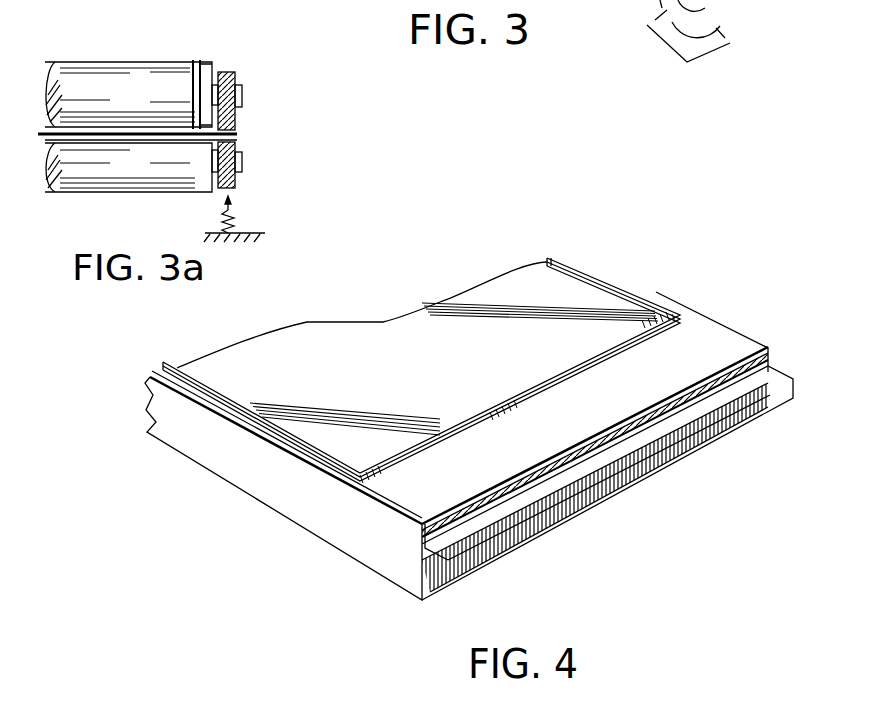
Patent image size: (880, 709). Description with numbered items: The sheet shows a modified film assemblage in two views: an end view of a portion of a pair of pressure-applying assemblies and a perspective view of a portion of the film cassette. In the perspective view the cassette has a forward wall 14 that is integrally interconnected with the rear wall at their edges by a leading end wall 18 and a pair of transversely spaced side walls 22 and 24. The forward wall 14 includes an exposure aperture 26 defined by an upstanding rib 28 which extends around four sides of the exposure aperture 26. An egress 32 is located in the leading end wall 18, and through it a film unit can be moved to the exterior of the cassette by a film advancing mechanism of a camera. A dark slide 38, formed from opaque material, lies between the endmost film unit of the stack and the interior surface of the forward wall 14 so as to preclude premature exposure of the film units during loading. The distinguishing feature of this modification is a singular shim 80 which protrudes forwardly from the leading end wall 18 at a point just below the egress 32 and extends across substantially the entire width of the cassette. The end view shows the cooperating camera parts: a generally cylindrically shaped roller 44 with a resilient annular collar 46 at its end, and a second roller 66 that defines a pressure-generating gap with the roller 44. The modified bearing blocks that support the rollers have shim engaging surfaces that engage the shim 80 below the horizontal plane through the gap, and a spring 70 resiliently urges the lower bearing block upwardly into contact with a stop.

In FIG. 4, the forward wall 14 is at (706, 343).
In FIG. 4, the leading end wall 18 is at (508, 540).
In FIG. 4, the side wall 22 is at (254, 482).
In FIG. 4, the side wall 24 is at (656, 294).
In FIG. 4, the exposure aperture 26 is at (544, 299).
In FIG. 4, the upstanding rib 28 is at (500, 412).
In FIG. 4, the egress 32 is at (674, 402).
In FIG. 4, the dark slide 38 is at (431, 364).
In FIG. 3A, the roller 44 is at (150, 61).
In FIG. 3A, the annular collar 46 is at (196, 61).
In FIG. 3A, the roller 66 is at (124, 193).
In FIG. 3A, the spring 70 is at (236, 222).
In FIG. 3A, the shim 80 is at (240, 140).
In FIG. 4, the shim 80 is at (638, 452).